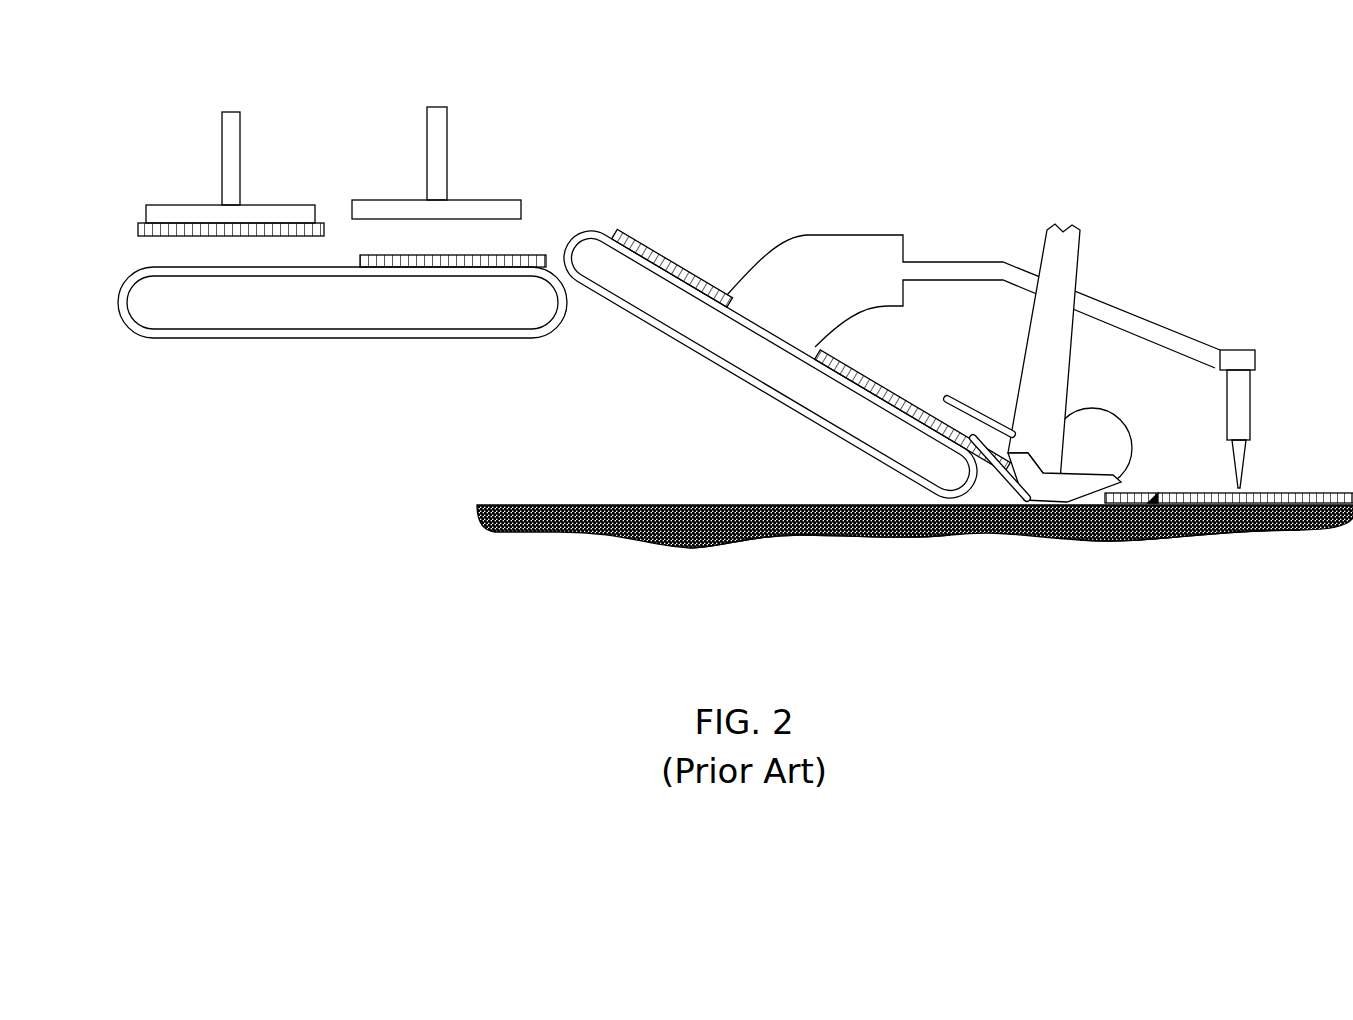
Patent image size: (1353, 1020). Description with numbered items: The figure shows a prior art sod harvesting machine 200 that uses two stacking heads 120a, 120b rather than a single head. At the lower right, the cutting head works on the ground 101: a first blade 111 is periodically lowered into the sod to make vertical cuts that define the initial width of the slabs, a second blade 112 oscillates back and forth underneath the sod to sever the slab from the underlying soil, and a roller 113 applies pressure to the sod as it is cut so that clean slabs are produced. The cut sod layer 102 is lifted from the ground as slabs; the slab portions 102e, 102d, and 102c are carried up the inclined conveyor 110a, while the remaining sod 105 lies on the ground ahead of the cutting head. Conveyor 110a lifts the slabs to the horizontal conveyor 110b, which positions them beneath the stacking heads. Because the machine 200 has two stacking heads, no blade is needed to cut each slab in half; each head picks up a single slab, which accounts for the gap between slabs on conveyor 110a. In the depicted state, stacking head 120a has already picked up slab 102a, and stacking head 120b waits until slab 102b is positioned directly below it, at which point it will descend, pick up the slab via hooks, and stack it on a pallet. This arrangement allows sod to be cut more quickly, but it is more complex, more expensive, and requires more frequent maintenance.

The harvesting machine 200 is at (765, 35).
The substrate / mold surface 101 is at (480, 523).
The laid composite layer 102 is at (1288, 533).
The slab 102a is at (138, 230).
The slab 102b is at (513, 255).
The composite ply segment on conveyor 102c is at (647, 245).
The composite ply segment on conveyor 102d is at (845, 355).
The composite ply segment at compaction 102e is at (1003, 440).
The compacted ply on substrate 105 is at (1150, 493).
The conveyor 110a is at (650, 325).
The conveyor 110b is at (192, 340).
The first blade 111 is at (1247, 472).
The second blade 112 is at (1017, 535).
The roller 113 is at (1120, 423).
The stacking head 120a is at (221, 148).
The stacking head 120b is at (427, 143).